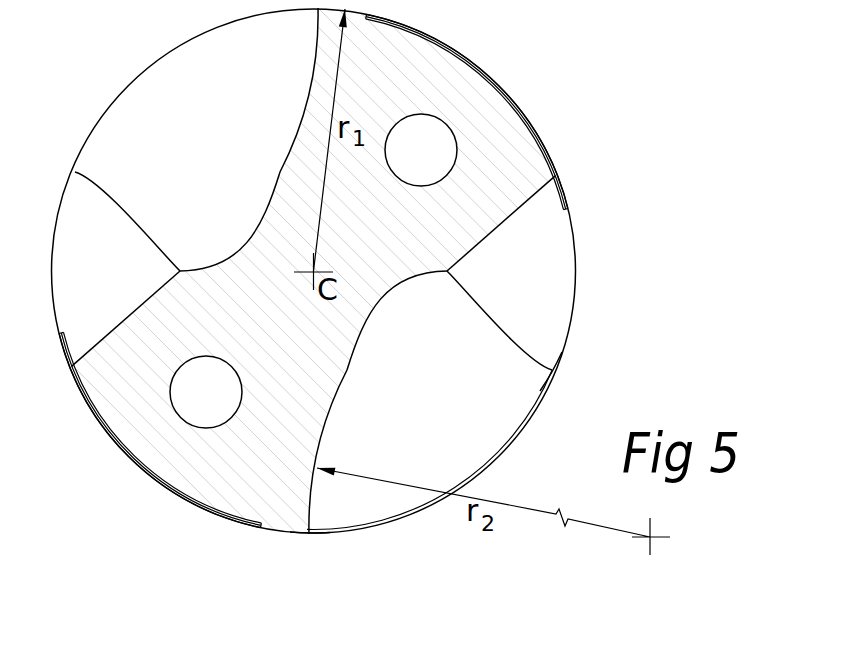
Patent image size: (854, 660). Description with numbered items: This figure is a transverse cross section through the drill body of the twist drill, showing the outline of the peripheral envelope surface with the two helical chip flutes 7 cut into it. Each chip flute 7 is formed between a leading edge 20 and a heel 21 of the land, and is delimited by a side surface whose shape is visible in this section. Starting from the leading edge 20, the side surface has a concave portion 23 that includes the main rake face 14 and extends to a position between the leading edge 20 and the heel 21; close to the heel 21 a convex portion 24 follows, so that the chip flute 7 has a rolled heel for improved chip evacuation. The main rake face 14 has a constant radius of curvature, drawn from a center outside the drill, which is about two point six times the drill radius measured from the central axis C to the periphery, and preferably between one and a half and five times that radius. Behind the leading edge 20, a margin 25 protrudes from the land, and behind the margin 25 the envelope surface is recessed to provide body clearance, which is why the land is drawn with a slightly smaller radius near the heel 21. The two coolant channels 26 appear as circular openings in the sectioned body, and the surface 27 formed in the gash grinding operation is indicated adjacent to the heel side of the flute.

The chip flute 7 is at (457, 442).
The main rake face 14 is at (322, 453).
The leading edge 20 is at (305, 535).
The heel 21 is at (553, 373).
The concave portion 23 is at (353, 353).
The convex portion 24 is at (502, 332).
The margin 25 is at (282, 535).
The coolant channel 26 is at (428, 135).
The surface 27 is at (546, 278).